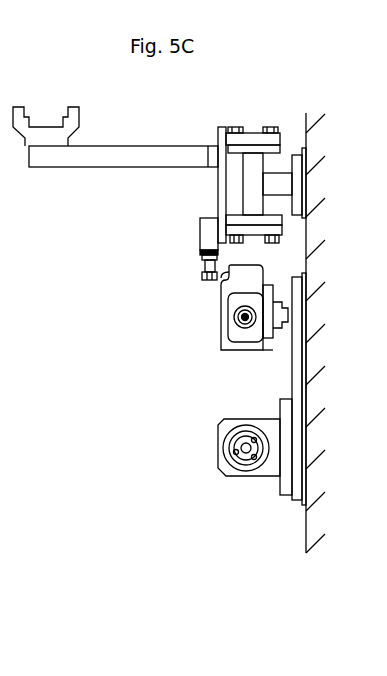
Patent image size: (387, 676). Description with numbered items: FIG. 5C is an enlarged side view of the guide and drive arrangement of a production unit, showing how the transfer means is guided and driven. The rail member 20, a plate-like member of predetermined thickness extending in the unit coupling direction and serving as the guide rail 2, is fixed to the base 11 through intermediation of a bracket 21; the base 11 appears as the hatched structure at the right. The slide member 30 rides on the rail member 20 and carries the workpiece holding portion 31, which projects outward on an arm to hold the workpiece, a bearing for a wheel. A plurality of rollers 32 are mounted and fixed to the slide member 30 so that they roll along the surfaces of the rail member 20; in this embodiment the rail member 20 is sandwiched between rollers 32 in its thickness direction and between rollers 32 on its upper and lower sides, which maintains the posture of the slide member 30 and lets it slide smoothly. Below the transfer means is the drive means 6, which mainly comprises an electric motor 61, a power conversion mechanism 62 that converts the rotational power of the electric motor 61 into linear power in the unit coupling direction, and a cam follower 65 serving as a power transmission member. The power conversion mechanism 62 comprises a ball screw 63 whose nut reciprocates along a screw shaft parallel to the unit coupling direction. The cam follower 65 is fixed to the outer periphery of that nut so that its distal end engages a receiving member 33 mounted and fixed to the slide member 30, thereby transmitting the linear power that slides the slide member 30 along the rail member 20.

The guide rail 2 is at (288, 142).
The drive means 6 is at (201, 363).
The base 11 is at (380, 313).
The rail member 20 is at (253, 172).
The bracket 21 is at (285, 188).
The slide member 30 is at (203, 190).
The workpiece holding portion 31 is at (46, 132).
The rollers 32 is at (270, 126).
The receiving member 33 is at (208, 234).
The electric motor 61 is at (233, 455).
The power conversion mechanism 62 is at (218, 347).
The ball screw 63 is at (220, 312).
The cam follower 65 is at (200, 258).